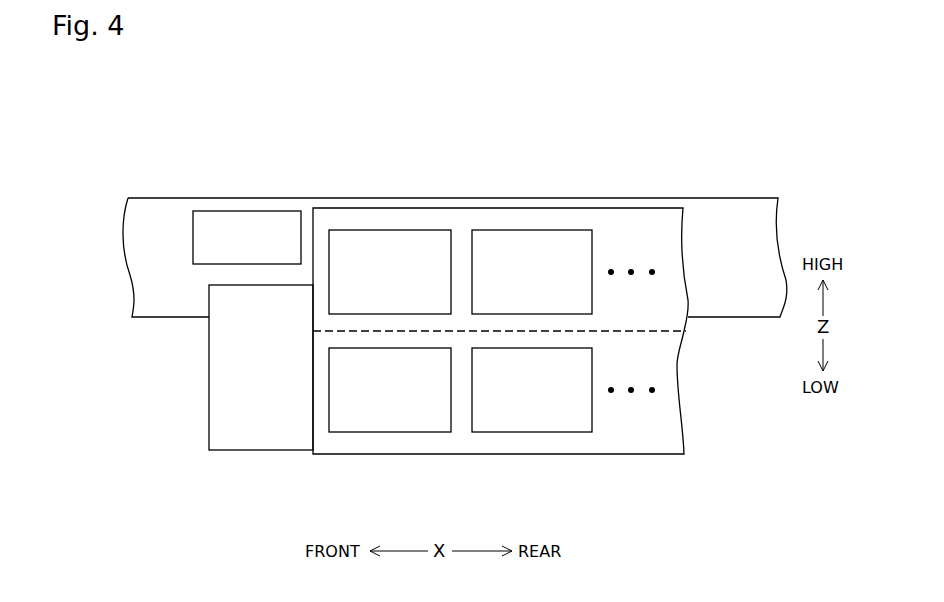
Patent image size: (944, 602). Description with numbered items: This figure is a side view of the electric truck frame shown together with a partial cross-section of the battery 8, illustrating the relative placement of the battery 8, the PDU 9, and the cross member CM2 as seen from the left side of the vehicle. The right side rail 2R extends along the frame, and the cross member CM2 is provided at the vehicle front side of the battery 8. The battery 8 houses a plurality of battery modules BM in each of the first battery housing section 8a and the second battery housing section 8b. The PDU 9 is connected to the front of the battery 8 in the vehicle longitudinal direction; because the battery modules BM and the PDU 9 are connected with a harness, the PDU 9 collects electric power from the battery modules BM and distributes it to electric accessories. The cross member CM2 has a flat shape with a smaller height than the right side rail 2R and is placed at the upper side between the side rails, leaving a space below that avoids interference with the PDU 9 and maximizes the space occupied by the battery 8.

The right side rail 2R is at (151, 217).
The cross member CM2 is at (251, 227).
The PDU 9 is at (257, 428).
The battery 8 is at (551, 331).
The first battery housing section 8a is at (670, 299).
The second battery housing section 8b is at (663, 367).
The battery module BM is at (388, 228).